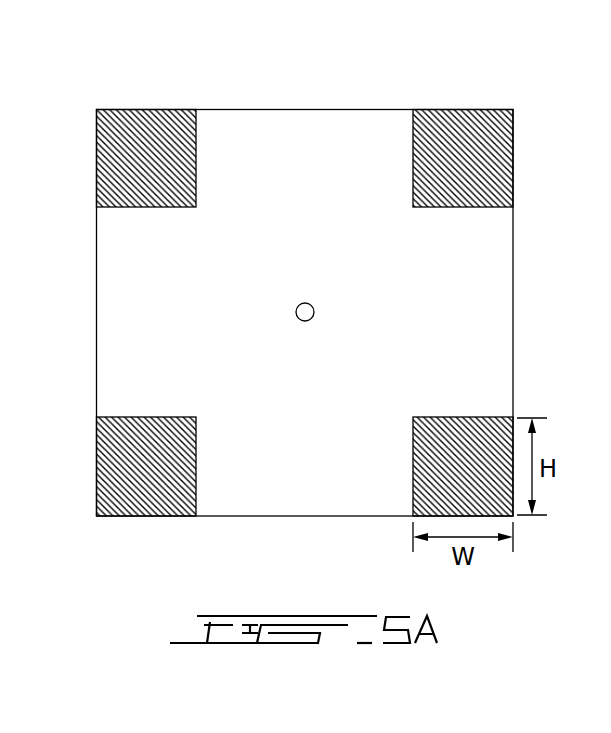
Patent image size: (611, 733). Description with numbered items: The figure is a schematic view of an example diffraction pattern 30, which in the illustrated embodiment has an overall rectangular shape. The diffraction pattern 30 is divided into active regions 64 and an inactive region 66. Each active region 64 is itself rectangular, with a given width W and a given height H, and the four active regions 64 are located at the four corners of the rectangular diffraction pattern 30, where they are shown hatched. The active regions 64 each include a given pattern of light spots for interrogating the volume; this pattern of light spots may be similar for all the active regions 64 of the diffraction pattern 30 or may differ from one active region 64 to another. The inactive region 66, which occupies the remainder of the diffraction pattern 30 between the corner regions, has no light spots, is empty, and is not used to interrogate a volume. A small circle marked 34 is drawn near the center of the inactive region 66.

The diffraction pattern 30 is at (74, 236).
The central hole 34 is at (304, 302).
The active region 64 is at (152, 134).
The inactive region 66 is at (306, 134).